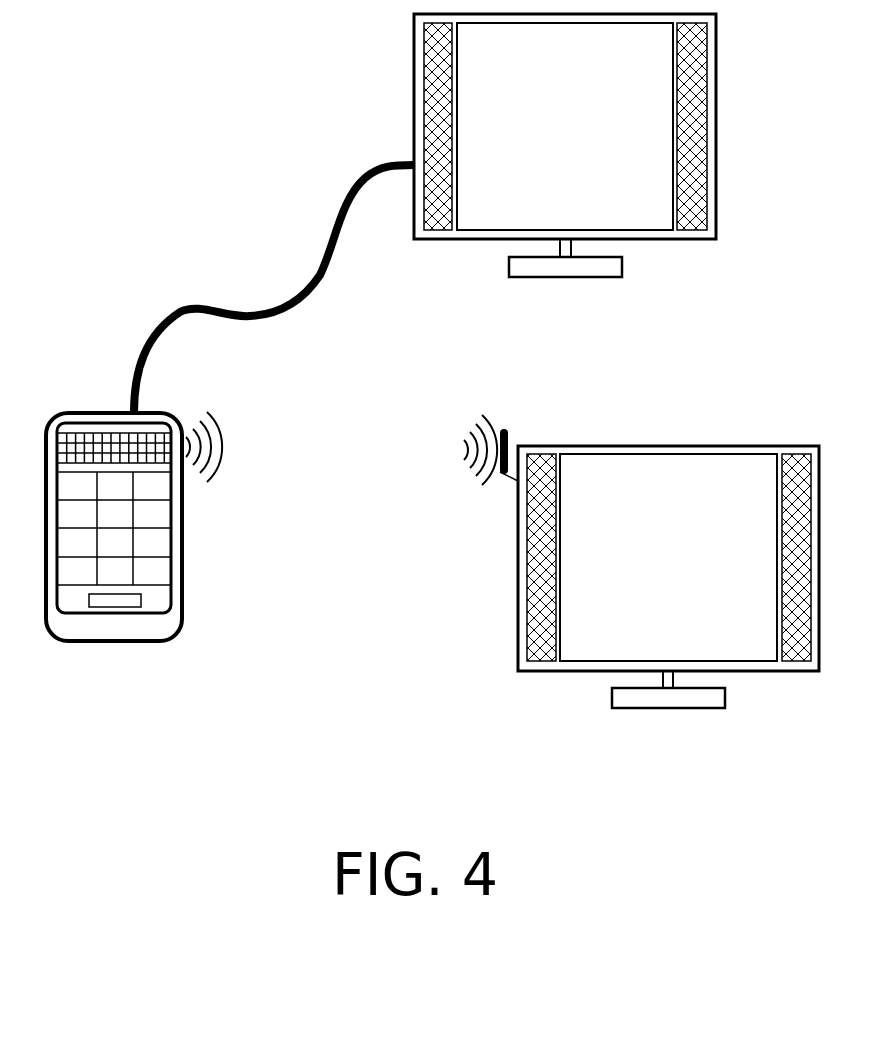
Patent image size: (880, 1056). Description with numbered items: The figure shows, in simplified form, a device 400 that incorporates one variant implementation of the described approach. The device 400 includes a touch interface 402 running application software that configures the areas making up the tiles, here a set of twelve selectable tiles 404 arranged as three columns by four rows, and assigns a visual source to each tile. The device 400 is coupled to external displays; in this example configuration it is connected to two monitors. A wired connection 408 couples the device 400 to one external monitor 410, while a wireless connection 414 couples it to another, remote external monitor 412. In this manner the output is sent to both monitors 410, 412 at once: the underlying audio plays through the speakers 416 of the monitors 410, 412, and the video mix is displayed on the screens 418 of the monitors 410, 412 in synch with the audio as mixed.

The device 400 is at (185, 582).
The touch interface 402 is at (173, 538).
The selectable tiles 404 is at (157, 490).
The wired connection 408 is at (329, 233).
The external monitor 410 is at (682, 257).
The remote external monitor 412 is at (490, 633).
The wireless connection 414 is at (517, 418).
The speakers 416 is at (425, 87).
The screens 418 is at (545, 139).